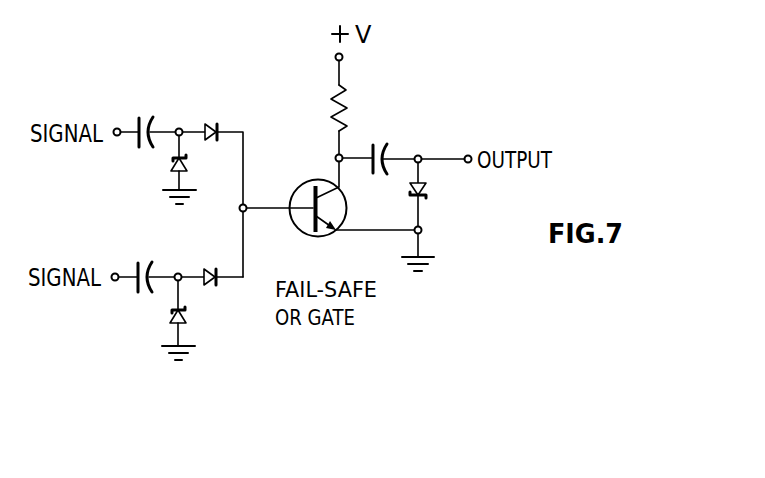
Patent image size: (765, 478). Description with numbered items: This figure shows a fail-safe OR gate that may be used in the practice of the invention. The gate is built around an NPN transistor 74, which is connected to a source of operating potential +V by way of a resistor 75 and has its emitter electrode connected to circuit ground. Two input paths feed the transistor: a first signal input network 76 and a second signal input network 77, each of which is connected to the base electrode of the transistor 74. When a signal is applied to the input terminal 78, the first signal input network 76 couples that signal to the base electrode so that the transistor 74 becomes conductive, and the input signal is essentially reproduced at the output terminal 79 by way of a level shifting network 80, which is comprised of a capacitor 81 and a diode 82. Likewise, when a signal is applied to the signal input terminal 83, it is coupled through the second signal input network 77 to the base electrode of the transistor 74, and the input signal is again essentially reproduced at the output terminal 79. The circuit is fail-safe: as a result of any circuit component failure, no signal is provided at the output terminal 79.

The NPN transistor 74 is at (298, 183).
The resistor 75 is at (331, 97).
The first signal input network 76 is at (189, 106).
The second signal input network 77 is at (184, 254).
The input terminal 78 is at (118, 128).
The output terminal 79 is at (466, 156).
The level shifting network 80 is at (408, 195).
The capacitor 81 is at (385, 157).
The diode 82 is at (428, 190).
The signal input terminal 83 is at (115, 274).